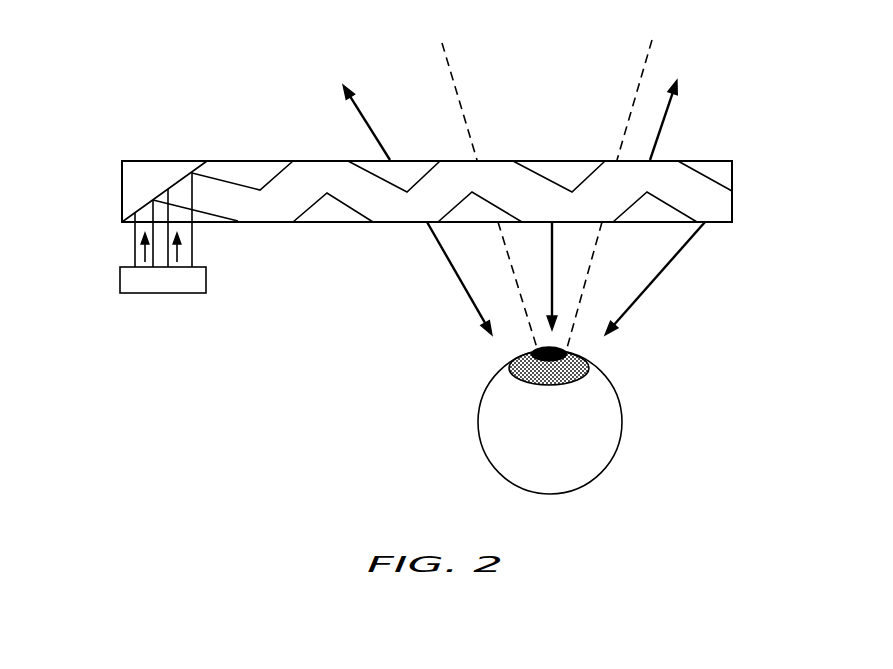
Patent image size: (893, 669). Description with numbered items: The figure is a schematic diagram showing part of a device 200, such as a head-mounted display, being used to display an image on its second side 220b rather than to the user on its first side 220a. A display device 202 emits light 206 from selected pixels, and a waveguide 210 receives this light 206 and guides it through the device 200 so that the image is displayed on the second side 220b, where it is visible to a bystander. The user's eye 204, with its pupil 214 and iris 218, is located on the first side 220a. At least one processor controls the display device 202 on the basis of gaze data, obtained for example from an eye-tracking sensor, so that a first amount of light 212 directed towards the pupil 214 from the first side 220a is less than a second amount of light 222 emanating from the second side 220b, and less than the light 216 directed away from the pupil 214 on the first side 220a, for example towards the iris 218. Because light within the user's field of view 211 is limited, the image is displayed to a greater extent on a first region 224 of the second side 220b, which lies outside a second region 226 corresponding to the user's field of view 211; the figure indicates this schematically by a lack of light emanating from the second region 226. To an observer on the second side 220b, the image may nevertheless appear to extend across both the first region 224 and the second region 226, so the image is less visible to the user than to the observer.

The device 200 is at (130, 74).
The display device 202 is at (207, 282).
The user's eye 204 is at (614, 390).
The light emitted from the display device 206 is at (140, 258).
The waveguide 210 is at (342, 185).
The user's field of view 211 is at (505, 245).
The first amount of light directed towards the pupil 212 is at (553, 270).
The pupil 214 is at (550, 365).
The light directed away from the pupil 216 is at (468, 302).
The iris 218 is at (515, 380).
The first side of the device 220a is at (314, 250).
The second side of the device 220b is at (243, 125).
The second amount of light emanating from the second side 222 is at (360, 107).
The first region of the second side 224 is at (330, 121).
The second region of the second side 226 is at (557, 119).